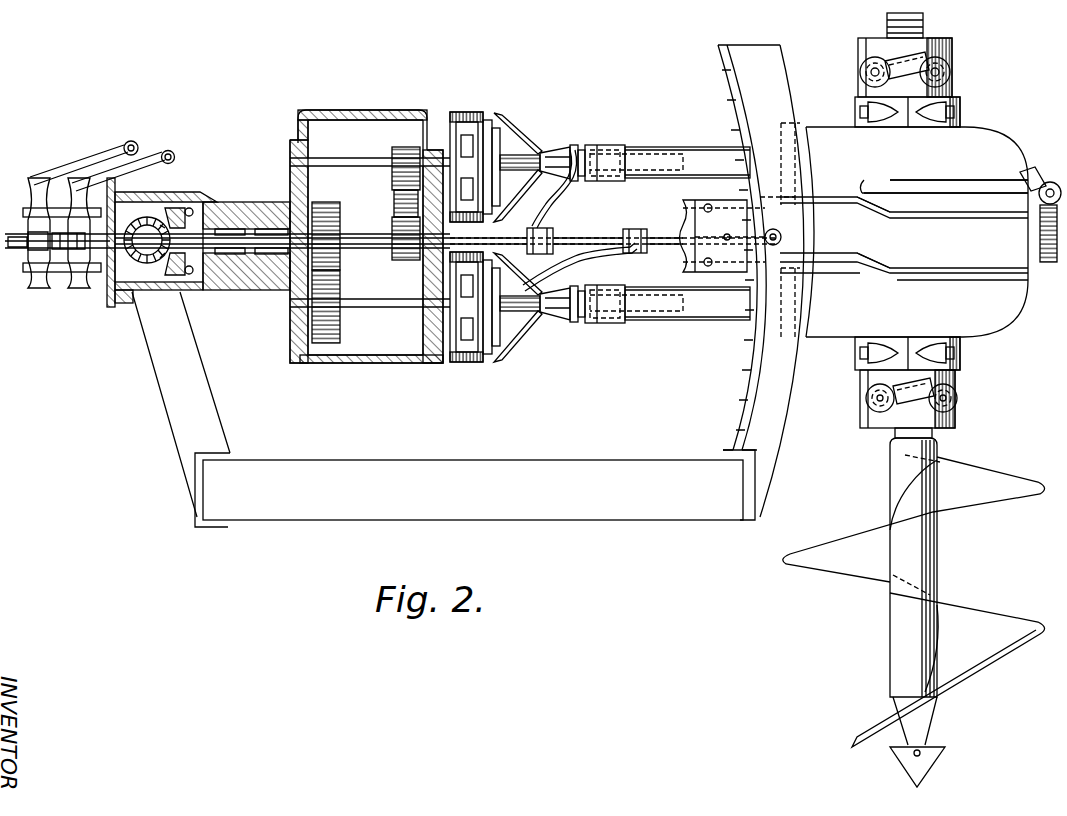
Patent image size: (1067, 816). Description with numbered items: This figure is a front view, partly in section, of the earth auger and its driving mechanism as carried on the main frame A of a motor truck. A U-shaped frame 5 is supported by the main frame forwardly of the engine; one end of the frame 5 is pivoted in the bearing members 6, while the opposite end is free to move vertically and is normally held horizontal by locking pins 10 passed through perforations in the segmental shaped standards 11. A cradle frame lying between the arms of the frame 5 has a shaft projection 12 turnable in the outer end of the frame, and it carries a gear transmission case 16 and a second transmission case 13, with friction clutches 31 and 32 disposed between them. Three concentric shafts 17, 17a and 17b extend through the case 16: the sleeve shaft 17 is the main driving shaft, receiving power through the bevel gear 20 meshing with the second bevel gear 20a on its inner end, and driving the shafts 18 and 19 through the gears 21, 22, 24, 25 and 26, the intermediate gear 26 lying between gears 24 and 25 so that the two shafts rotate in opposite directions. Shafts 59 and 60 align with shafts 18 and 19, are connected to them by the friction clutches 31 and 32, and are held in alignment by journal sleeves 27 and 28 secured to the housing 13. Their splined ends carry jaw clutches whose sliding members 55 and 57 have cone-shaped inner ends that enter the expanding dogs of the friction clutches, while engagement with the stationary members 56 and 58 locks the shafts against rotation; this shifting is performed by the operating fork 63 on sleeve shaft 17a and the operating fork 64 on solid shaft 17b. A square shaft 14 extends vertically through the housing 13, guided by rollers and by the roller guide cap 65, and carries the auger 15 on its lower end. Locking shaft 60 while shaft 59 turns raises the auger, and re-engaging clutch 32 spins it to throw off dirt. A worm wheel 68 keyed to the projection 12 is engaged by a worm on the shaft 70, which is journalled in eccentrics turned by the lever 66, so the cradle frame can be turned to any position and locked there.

The U-shaped frame 5 is at (904, 232).
The bearing members 6 is at (172, 398).
The locking pins 10 is at (782, 240).
The segmental shaped standards 11 is at (761, 281).
The shaft projection 12 is at (1028, 230).
The second transmission case 13 is at (946, 168).
The shaft 14 is at (924, 25).
The auger 15 is at (938, 551).
The gear transmission case 16 is at (376, 363).
The sleeve shaft 17 is at (222, 205).
The sleeve shaft 17a is at (280, 256).
The solid shaft 17b is at (235, 256).
The shaft 18 is at (348, 152).
The shaft 19 is at (391, 310).
The bevel gear 20 is at (152, 218).
The second bevel gear 20a is at (185, 280).
The gear 21 is at (341, 266).
The gear 22 is at (341, 330).
The gear 24 is at (404, 261).
The gear 25 is at (393, 165).
The intermediate gear 26 is at (394, 200).
The journal sleeve 27 is at (698, 137).
The journal sleeve 28 is at (692, 322).
The friction clutch 31 is at (478, 112).
The friction clutch 32 is at (470, 362).
The sliding jaw clutch member 55 is at (563, 148).
The stationary jaw clutch member 56 is at (612, 145).
The sliding jaw clutch member 57 is at (568, 322).
The stationary jaw clutch member 58 is at (612, 324).
The shaft 59 is at (515, 155).
The shaft 60 is at (528, 318).
The operating fork 63 is at (572, 205).
The operating fork 64 is at (622, 262).
The roller guide cap 65 is at (954, 68).
The lever 66 is at (1022, 178).
The worm wheel 68 is at (1047, 264).
The shaft 70 is at (1051, 181).
The main frame A is at (437, 466).